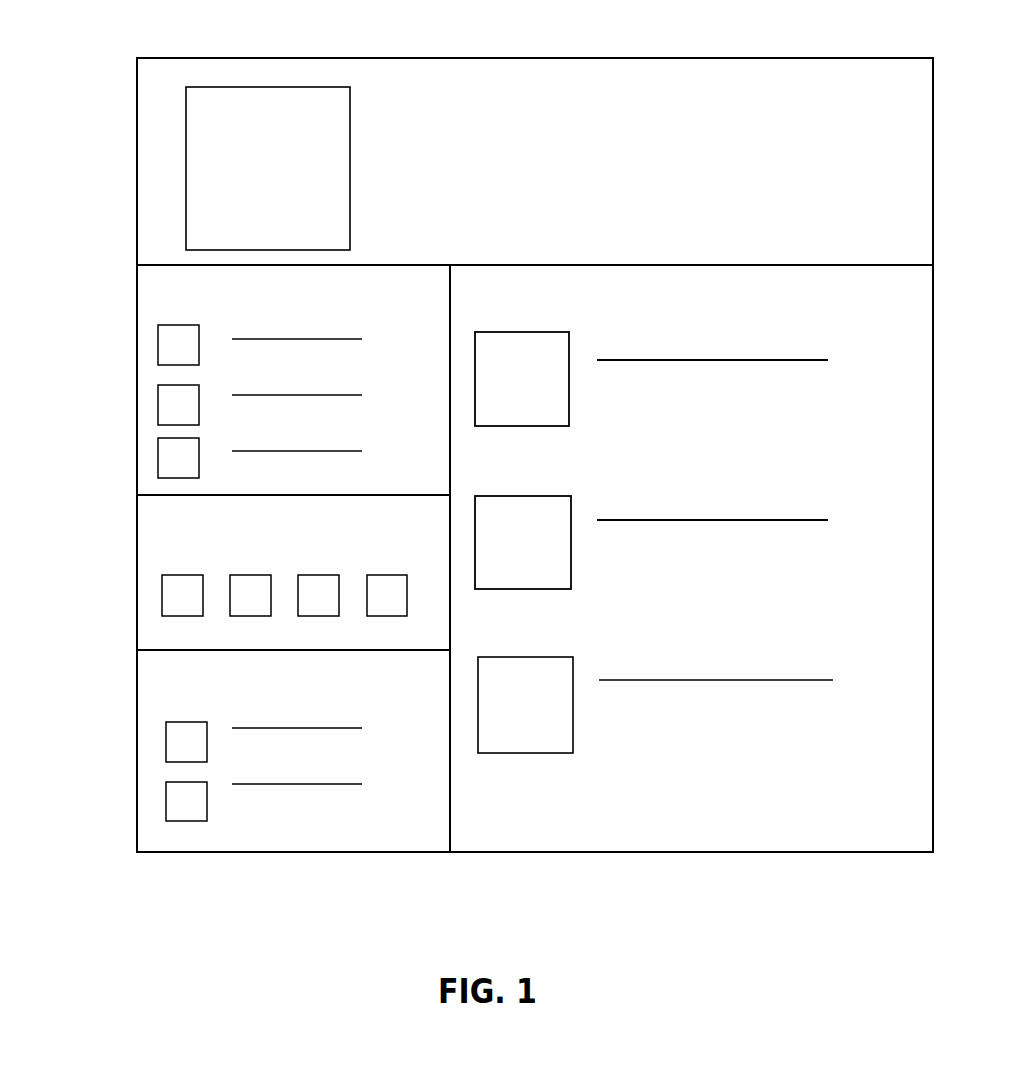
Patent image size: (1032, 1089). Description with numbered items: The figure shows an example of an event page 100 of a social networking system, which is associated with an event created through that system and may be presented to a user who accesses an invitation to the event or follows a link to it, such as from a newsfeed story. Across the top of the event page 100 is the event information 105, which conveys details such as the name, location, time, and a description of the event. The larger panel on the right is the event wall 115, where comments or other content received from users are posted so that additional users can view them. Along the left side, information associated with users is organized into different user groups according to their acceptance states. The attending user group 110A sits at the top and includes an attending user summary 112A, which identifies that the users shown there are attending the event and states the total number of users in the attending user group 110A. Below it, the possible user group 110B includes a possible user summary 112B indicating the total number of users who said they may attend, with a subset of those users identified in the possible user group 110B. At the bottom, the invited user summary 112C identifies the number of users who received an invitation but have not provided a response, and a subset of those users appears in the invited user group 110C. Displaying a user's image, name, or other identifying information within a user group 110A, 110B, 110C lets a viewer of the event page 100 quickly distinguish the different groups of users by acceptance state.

The event page 100 is at (525, 55).
The event information 105 is at (638, 160).
The attending user group 110A is at (135, 269).
The possible user group 110B is at (135, 497).
The invited user group 110C is at (135, 652).
The attending user summary 112A is at (242, 287).
The possible user summary 112B is at (247, 518).
The invited user summary 112C is at (244, 676).
The event wall 115 is at (695, 820).